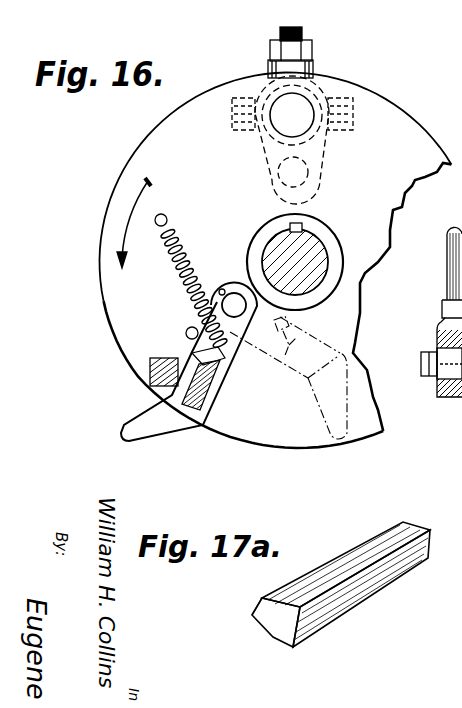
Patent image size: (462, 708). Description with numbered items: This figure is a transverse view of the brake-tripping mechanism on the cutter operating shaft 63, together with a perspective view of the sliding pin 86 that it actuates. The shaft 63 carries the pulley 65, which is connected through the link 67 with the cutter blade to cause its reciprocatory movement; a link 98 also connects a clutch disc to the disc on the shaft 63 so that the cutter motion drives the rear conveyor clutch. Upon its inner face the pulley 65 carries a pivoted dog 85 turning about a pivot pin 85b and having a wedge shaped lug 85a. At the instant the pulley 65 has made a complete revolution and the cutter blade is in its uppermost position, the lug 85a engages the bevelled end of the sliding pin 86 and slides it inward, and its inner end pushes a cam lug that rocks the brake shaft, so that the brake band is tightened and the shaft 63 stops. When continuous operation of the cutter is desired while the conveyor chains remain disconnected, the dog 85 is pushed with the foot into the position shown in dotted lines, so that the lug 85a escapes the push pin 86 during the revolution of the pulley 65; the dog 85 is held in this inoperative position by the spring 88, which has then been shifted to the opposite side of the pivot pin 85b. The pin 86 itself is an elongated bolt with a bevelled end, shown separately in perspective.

In FIG. 16, the shaft 63 is at (318, 250).
In FIG. 16, the pulley 65 is at (297, 449).
In FIG. 16, the link 67 is at (282, 32).
In FIG. 16, the pivoted dog 85 is at (178, 427).
In FIG. 16, the wedge shaped lug 85a is at (210, 388).
In FIG. 16, the pivot pin 85b is at (234, 297).
In FIG. 16, the sliding pin 86 is at (158, 375).
In FIG. 17A, the sliding pin 86 is at (392, 573).
In FIG. 16, the spring 88 is at (186, 289).
In FIG. 16, the link 98 is at (448, 268).